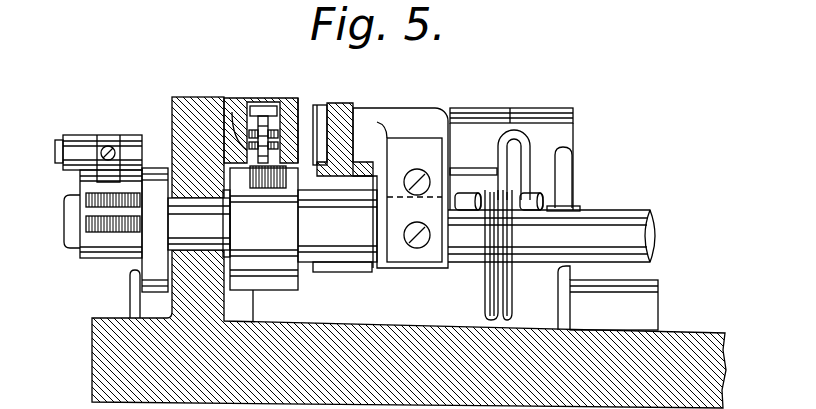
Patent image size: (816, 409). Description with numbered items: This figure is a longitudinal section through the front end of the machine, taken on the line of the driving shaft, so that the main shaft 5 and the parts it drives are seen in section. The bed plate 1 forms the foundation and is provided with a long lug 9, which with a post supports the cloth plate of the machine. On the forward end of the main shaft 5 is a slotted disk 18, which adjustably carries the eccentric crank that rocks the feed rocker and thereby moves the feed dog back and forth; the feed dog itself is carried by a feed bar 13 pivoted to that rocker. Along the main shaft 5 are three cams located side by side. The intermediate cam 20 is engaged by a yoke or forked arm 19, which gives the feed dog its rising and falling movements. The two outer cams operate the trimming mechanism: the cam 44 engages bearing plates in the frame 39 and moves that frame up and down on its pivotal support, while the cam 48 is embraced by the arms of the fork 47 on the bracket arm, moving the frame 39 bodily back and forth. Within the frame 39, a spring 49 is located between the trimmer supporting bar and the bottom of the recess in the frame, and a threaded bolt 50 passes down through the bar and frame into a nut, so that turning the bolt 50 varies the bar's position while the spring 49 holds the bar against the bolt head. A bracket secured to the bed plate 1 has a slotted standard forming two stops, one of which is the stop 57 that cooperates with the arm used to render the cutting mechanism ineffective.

The bed plate 1 is at (130, 362).
The main shaft 5 is at (600, 222).
The long lug 9 is at (190, 96).
The feed bar 13 is at (350, 158).
The slotted disk 18 is at (157, 237).
The yoke or forked arm 19 is at (352, 274).
The cam 20 is at (328, 246).
The frame 39 is at (304, 132).
The cam 44 is at (260, 243).
The fork 47 is at (440, 196).
The cam 48 is at (438, 270).
The spring 49 is at (247, 132).
The threaded bolt 50 is at (265, 106).
The stop 57 is at (316, 106).